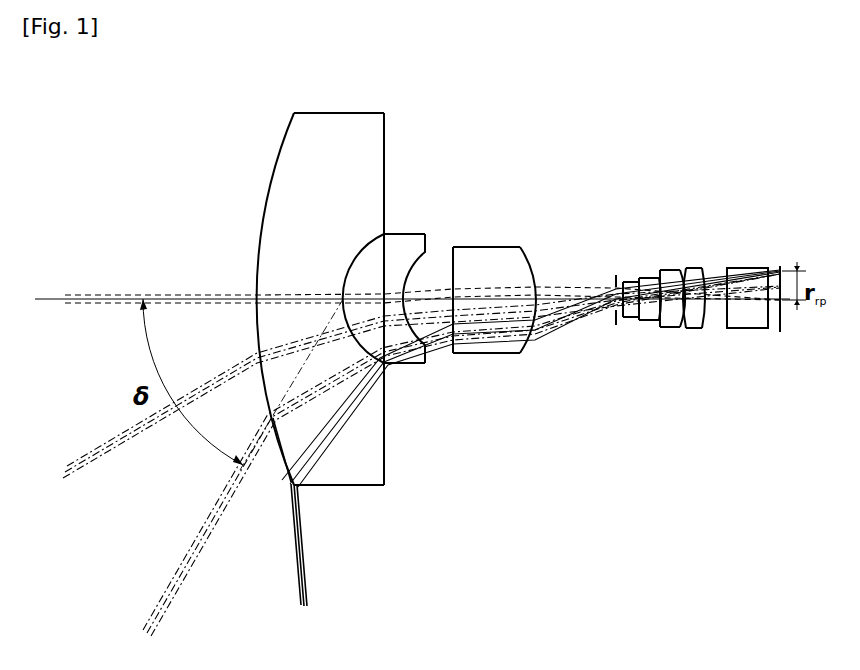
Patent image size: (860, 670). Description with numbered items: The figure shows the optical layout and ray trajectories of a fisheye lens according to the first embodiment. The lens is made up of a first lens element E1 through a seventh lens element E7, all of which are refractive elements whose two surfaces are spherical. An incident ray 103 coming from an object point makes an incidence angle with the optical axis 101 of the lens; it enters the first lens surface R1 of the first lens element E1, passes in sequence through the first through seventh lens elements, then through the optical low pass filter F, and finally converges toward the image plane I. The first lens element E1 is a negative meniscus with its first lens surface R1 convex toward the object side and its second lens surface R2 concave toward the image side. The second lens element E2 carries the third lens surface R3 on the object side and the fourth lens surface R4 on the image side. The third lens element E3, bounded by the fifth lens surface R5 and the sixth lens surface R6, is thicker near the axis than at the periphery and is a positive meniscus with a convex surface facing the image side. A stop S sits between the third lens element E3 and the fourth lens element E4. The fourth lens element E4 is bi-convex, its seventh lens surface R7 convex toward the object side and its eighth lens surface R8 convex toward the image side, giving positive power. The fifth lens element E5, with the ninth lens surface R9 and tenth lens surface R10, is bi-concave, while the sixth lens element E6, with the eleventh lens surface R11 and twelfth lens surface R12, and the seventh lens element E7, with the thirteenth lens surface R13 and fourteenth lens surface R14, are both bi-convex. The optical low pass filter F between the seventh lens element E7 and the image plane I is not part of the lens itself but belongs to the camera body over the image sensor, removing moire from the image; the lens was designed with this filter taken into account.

The optical axis 101 is at (50, 299).
The incident ray 103 is at (152, 626).
The first lens element E1 is at (308, 271).
The second lens element E2 is at (390, 278).
The third lens element E3 is at (495, 308).
The fourth lens element E4 is at (620, 301).
The fifth lens element E5 is at (655, 300).
The sixth lens element E6 is at (693, 310).
The seventh lens element E7 is at (740, 302).
The stop S is at (616, 277).
The optical low pass filter F is at (771, 291).
The image plane I is at (780, 266).
The first lens surface R1 is at (263, 299).
The second lens surface R2 is at (351, 299).
The third lens surface R3 is at (363, 298).
The fourth lens surface R4 is at (413, 217).
The fifth lens surface R5 is at (449, 352).
The sixth lens surface R6 is at (537, 347).
The seventh lens surface R7 is at (620, 318).
The eighth lens surface R8 is at (639, 320).
The ninth lens surface R9 is at (658, 322).
The tenth lens surface R10 is at (661, 328).
The eleventh lens surface R11 is at (681, 328).
The twelfth lens surface R12 is at (687, 329).
The thirteenth lens surface R13 is at (703, 330).
The fourteenth lens surface R14 is at (712, 332).